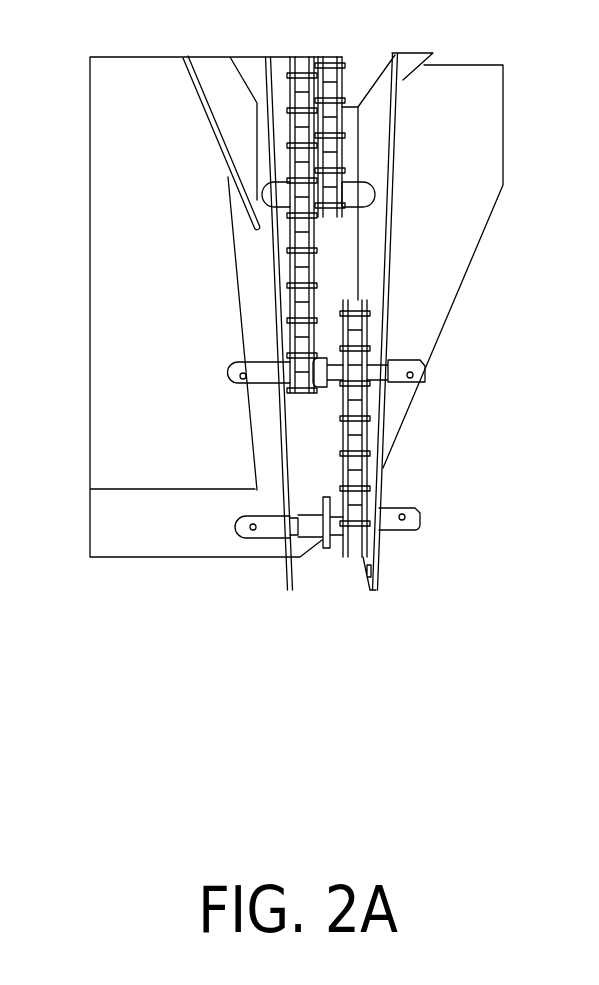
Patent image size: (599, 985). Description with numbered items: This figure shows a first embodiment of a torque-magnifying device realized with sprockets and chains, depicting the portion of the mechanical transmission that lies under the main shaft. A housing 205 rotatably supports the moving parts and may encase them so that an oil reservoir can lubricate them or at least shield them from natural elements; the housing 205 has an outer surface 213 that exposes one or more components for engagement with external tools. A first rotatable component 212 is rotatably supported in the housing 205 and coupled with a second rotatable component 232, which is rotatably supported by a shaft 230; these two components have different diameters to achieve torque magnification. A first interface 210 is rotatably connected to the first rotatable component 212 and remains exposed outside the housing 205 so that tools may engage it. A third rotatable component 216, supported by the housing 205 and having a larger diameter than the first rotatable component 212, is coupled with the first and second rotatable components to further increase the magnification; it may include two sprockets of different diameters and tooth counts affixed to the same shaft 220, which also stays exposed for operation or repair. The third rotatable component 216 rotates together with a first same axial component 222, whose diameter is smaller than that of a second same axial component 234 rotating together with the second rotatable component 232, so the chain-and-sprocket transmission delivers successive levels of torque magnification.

The housing 205 is at (382, 117).
The first interface 210 is at (420, 518).
The first rotatable component 212 is at (363, 532).
The outer surface 213 is at (385, 452).
The third rotatable component 216 is at (353, 333).
The shaft 220 is at (230, 373).
The first same axial component 222 is at (290, 393).
The shaft 230 is at (358, 192).
The second rotatable component 232 is at (337, 213).
The second same axial component 234 is at (288, 87).